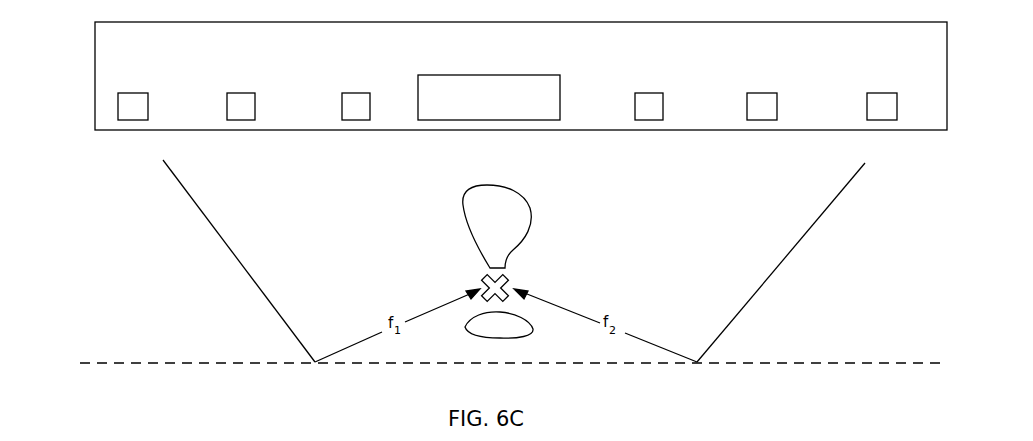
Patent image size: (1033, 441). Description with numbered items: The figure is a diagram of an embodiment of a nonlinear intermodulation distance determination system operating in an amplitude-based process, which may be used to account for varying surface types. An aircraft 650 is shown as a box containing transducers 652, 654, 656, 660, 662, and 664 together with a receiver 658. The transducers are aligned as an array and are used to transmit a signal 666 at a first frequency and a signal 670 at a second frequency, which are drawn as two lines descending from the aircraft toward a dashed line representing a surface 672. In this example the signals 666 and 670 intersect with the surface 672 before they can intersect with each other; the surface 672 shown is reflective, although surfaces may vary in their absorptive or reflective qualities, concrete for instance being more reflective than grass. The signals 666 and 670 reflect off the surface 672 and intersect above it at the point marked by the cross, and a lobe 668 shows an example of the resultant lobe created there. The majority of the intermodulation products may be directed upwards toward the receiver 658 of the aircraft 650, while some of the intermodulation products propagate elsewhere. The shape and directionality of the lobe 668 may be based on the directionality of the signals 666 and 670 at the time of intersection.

The aircraft 650 is at (95, 35).
The transducer 652 is at (118, 106).
The transducer 654 is at (227, 106).
The transducer 656 is at (342, 106).
The receiver 658 is at (418, 81).
The transducer 660 is at (635, 106).
The transducer 662 is at (747, 106).
The transducer 664 is at (867, 106).
The signal 666 is at (189, 195).
The lobe 668 is at (463, 229).
The signal 670 is at (837, 196).
The surface 672 is at (878, 357).